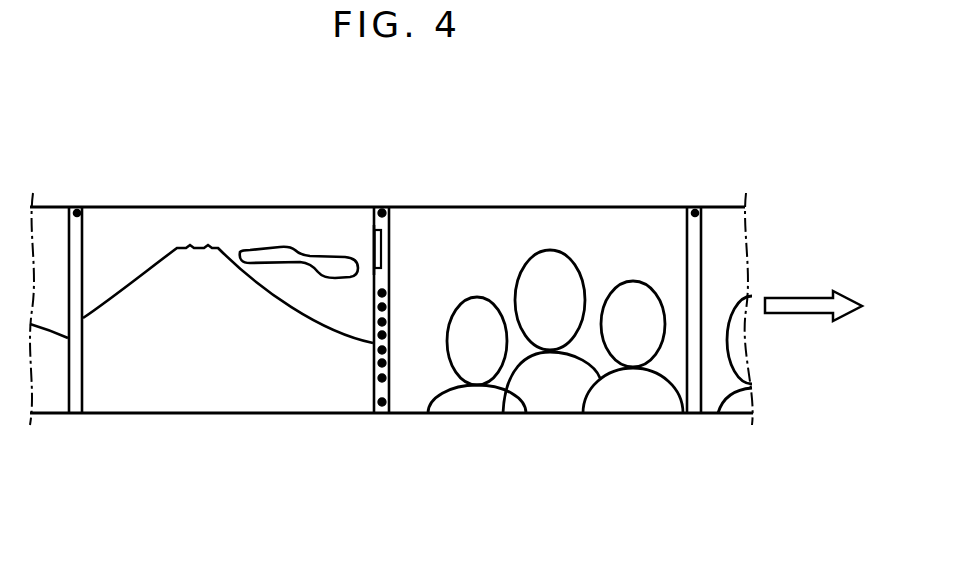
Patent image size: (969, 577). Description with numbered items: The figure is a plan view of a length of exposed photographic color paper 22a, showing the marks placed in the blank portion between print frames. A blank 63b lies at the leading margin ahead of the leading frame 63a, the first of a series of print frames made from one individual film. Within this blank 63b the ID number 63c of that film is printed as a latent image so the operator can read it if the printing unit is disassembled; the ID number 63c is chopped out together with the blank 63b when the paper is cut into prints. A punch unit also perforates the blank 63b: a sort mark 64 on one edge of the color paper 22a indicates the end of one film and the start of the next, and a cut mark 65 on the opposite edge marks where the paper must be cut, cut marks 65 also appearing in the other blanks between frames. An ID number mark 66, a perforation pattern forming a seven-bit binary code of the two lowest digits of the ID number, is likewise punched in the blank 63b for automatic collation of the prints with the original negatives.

The color paper 22a is at (556, 180).
The cut mark 65 is at (77, 212).
The leading frame 63a is at (262, 388).
The blank 63b is at (393, 218).
The ID number 63c is at (372, 243).
The sort mark 64 is at (406, 357).
The ID number mark 66 is at (393, 286).